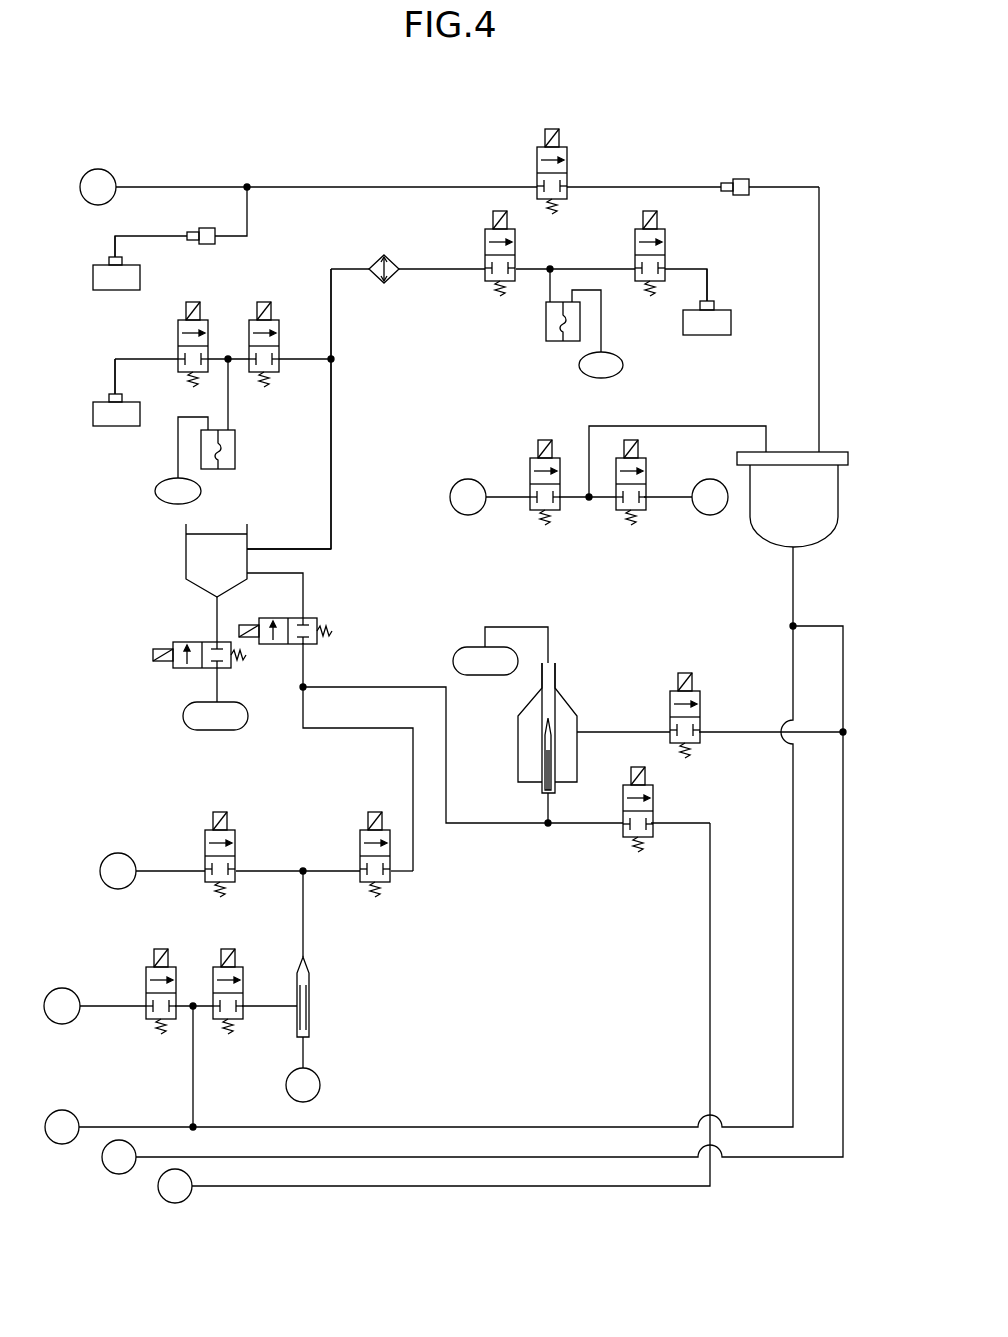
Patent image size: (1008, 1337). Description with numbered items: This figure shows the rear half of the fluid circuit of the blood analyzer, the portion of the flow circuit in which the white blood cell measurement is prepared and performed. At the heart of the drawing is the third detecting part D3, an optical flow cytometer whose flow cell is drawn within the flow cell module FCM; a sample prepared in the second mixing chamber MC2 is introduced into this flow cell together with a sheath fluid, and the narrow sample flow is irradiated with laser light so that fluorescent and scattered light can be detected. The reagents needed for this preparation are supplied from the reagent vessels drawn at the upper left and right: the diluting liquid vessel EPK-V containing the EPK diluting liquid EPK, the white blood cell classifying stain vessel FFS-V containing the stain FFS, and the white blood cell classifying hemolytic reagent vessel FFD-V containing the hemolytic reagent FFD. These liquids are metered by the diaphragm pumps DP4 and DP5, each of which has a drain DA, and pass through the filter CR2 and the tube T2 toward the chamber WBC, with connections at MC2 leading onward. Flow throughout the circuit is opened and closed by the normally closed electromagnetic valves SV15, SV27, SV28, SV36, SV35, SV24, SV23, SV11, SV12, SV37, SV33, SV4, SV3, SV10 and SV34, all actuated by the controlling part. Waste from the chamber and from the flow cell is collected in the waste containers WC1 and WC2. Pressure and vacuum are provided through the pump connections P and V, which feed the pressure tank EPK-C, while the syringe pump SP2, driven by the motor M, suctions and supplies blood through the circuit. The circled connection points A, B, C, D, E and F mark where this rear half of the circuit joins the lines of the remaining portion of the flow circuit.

The electromagnetic valve SV15 is at (554, 159).
The electromagnetic valve SV27 is at (471, 253).
The electromagnetic valve SV28 is at (681, 253).
The electromagnetic valve SV36 is at (189, 329).
The electromagnetic valve SV35 is at (273, 329).
The electromagnetic valve SV24 is at (543, 498).
The electromagnetic valve SV23 is at (646, 498).
The electromagnetic valve SV11 is at (684, 702).
The electromagnetic valve SV12 is at (631, 799).
The electromagnetic valve SV37 is at (226, 843).
The electromagnetic valve SV33 is at (371, 843).
The electromagnetic valve SV4 is at (155, 1007).
The electromagnetic valve SV3 is at (232, 1007).
The electromagnetic valve SV10 is at (199, 642).
The electromagnetic valve SV34 is at (285, 619).
The EPK diluting liquid EPK is at (116, 273).
The diluting liquid vessel EPK-V is at (107, 291).
The white blood cell classifying stain FFS is at (116, 410).
The white blood cell classifying stain vessel FFS-V is at (107, 427).
The white blood cell hemolytic reagent FFD is at (707, 318).
The white blood cell classifying hemolytic reagent vessel FFD-V is at (700, 337).
The diaphragm pump DP4 is at (546, 330).
The diaphragm pump DP5 is at (235, 449).
The drain DA is at (389, 428).
The filter CR2 is at (331, 359).
The tube T2 is at (331, 404).
The washing bottle container WBC is at (216, 560).
The second mixing chamber MC2 is at (247, 540).
The waste container 1 WC1 is at (215, 716).
The waste container 2 WC2 is at (485, 661).
The flow cell module FCM is at (523, 728).
The third detecting part D3 is at (567, 700).
The syringe pump SP2 is at (309, 975).
The pressure tank EPK-C is at (760, 542).
The port A is at (98, 187).
The port B is at (118, 871).
The port C is at (62, 1006).
The port D is at (62, 1127).
The port E is at (119, 1157).
The port F is at (175, 1186).
The pump V is at (468, 497).
The pump P is at (710, 497).
The motor M is at (303, 1085).